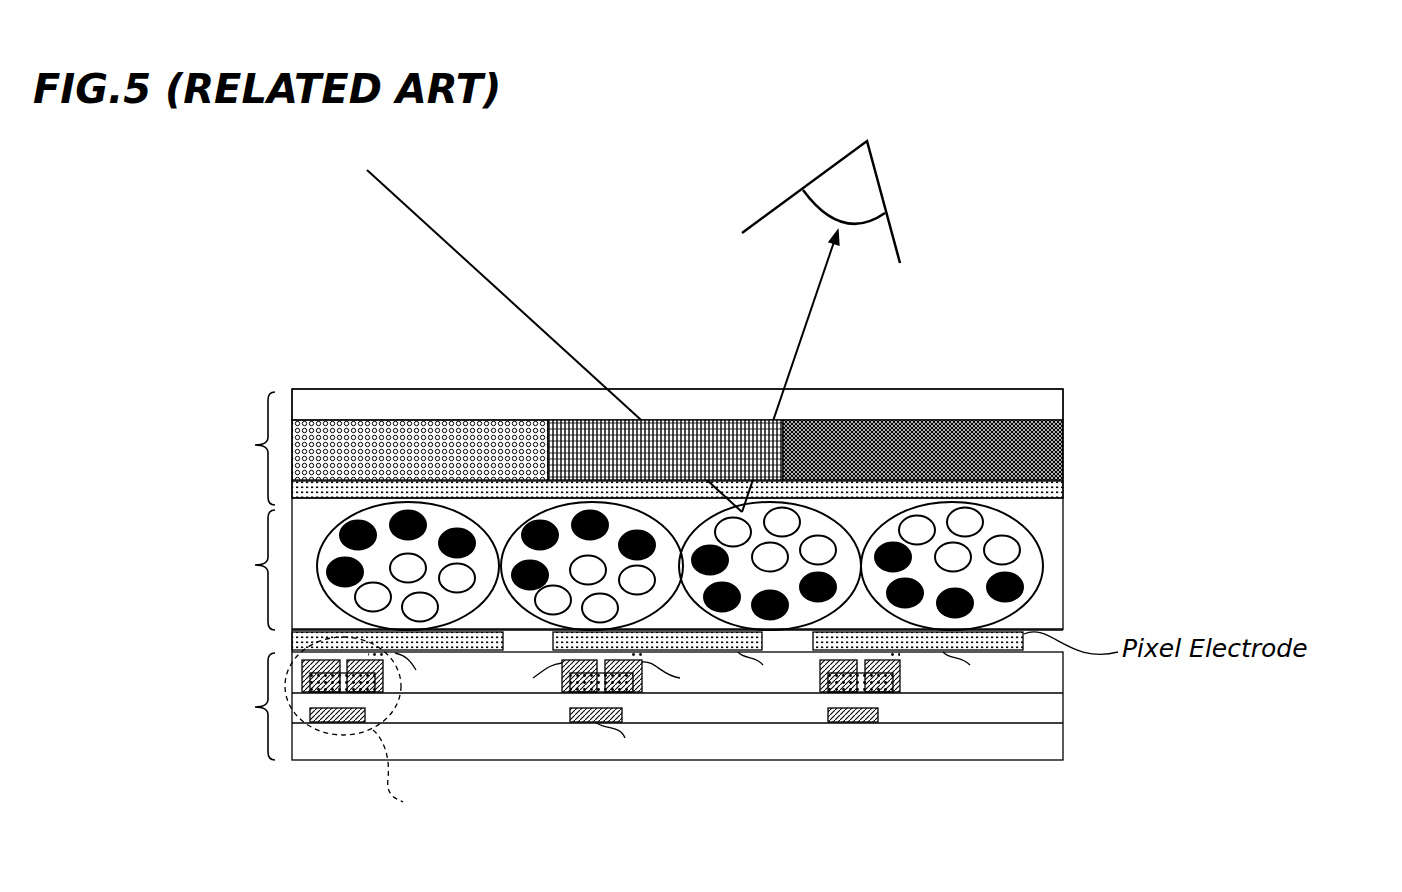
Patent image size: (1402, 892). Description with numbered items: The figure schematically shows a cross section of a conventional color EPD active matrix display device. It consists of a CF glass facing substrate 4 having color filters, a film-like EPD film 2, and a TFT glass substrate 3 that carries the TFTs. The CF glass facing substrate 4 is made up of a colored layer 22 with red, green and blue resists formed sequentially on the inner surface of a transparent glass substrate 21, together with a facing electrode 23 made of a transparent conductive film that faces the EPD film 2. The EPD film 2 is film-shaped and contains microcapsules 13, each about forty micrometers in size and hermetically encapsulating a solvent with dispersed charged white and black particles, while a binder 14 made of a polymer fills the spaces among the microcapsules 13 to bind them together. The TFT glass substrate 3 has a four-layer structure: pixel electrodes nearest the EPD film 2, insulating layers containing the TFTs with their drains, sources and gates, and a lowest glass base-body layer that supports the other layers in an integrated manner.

The EPD film 2 is at (255, 565).
The TFT glass substrate 3 is at (255, 707).
The CF glass facing substrate 4 is at (255, 445).
The microcapsule 13 is at (302, 583).
The binder 14 is at (322, 525).
The glass substrate 21 is at (1066, 402).
The colored layer 22 is at (1066, 446).
The facing electrode 23 is at (1066, 490).